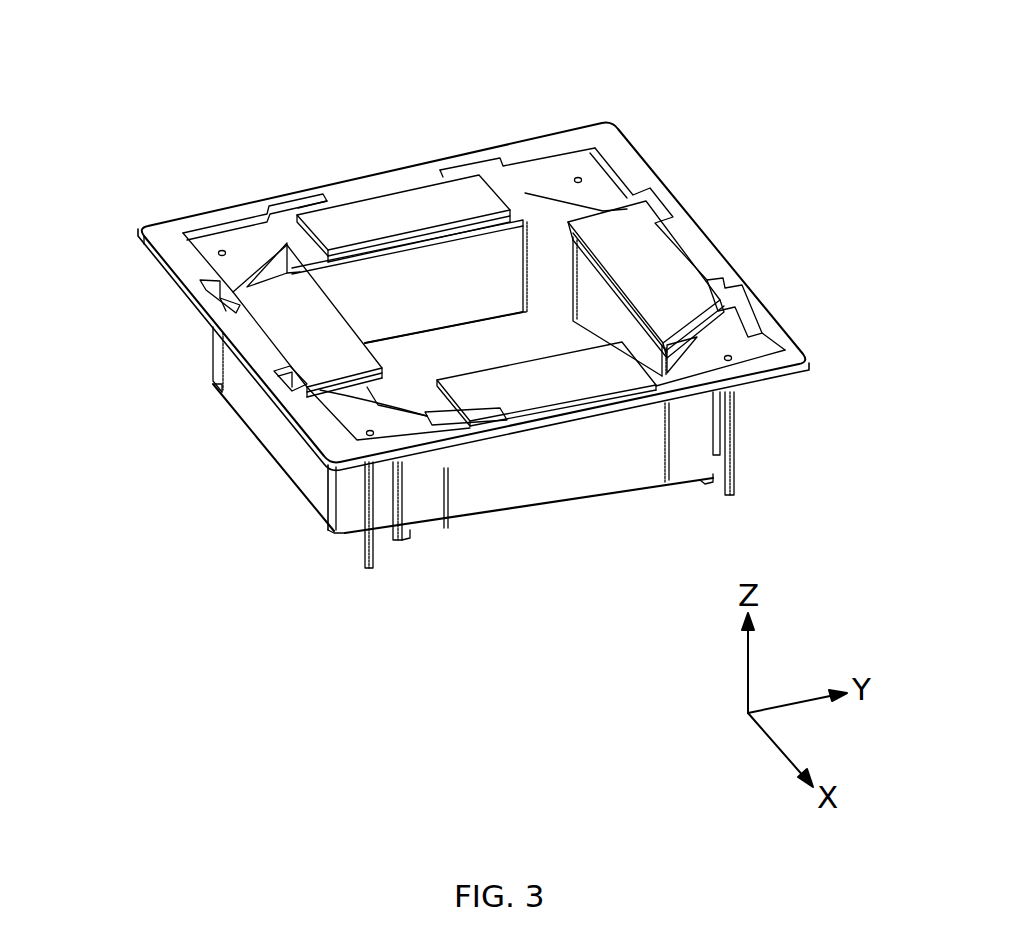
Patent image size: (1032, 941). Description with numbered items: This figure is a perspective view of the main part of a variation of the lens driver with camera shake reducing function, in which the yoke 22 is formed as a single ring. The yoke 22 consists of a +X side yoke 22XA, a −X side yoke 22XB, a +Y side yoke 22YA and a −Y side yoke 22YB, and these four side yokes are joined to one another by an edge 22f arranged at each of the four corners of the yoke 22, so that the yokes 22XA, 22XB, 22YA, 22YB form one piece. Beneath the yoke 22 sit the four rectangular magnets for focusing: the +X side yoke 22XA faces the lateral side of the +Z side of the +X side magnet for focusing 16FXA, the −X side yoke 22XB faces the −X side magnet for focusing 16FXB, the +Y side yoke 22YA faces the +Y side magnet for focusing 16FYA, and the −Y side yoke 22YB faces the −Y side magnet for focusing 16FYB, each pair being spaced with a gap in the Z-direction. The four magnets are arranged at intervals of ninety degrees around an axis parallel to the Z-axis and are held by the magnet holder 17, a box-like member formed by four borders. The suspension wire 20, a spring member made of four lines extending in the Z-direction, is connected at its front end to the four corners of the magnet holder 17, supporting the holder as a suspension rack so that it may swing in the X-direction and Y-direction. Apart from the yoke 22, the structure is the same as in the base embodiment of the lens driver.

The yoke 22 is at (632, 162).
The edge 22f is at (170, 243).
The +X side yoke 22XA is at (552, 370).
The −X side yoke 22XB is at (398, 197).
The +Y side yoke 22YA is at (655, 263).
The −Y side yoke 22YB is at (307, 317).
The +X side magnet for focusing 16FXA is at (518, 482).
The −X side magnet for focusing 16FXB is at (448, 282).
The +Y side magnet for focusing 16FYA is at (700, 318).
The −Y side magnet for focusing 16FYB is at (270, 418).
The magnet holder 17 is at (252, 253).
The suspension wire 20 is at (362, 552).